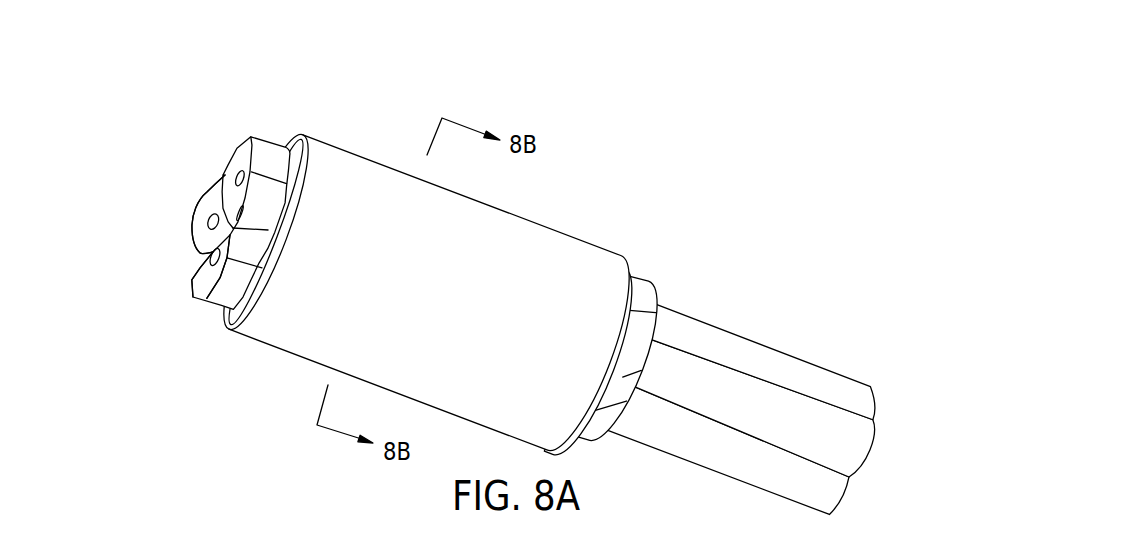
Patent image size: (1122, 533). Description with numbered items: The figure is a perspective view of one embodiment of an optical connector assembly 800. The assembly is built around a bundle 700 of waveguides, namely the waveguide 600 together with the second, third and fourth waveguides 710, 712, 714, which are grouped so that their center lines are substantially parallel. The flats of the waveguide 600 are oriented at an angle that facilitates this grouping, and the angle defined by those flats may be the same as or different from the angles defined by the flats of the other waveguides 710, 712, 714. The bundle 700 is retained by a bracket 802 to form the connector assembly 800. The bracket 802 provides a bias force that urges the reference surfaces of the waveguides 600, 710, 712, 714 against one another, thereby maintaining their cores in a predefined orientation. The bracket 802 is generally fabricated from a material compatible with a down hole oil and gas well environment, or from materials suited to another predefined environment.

The connector assembly 800 is at (569, 93).
The bracket 802 is at (498, 215).
The waveguide 600 is at (265, 156).
The bundle 700 is at (670, 272).
The second waveguide 710 is at (215, 200).
The third waveguide 712 is at (193, 280).
The fourth waveguide 714 is at (237, 230).